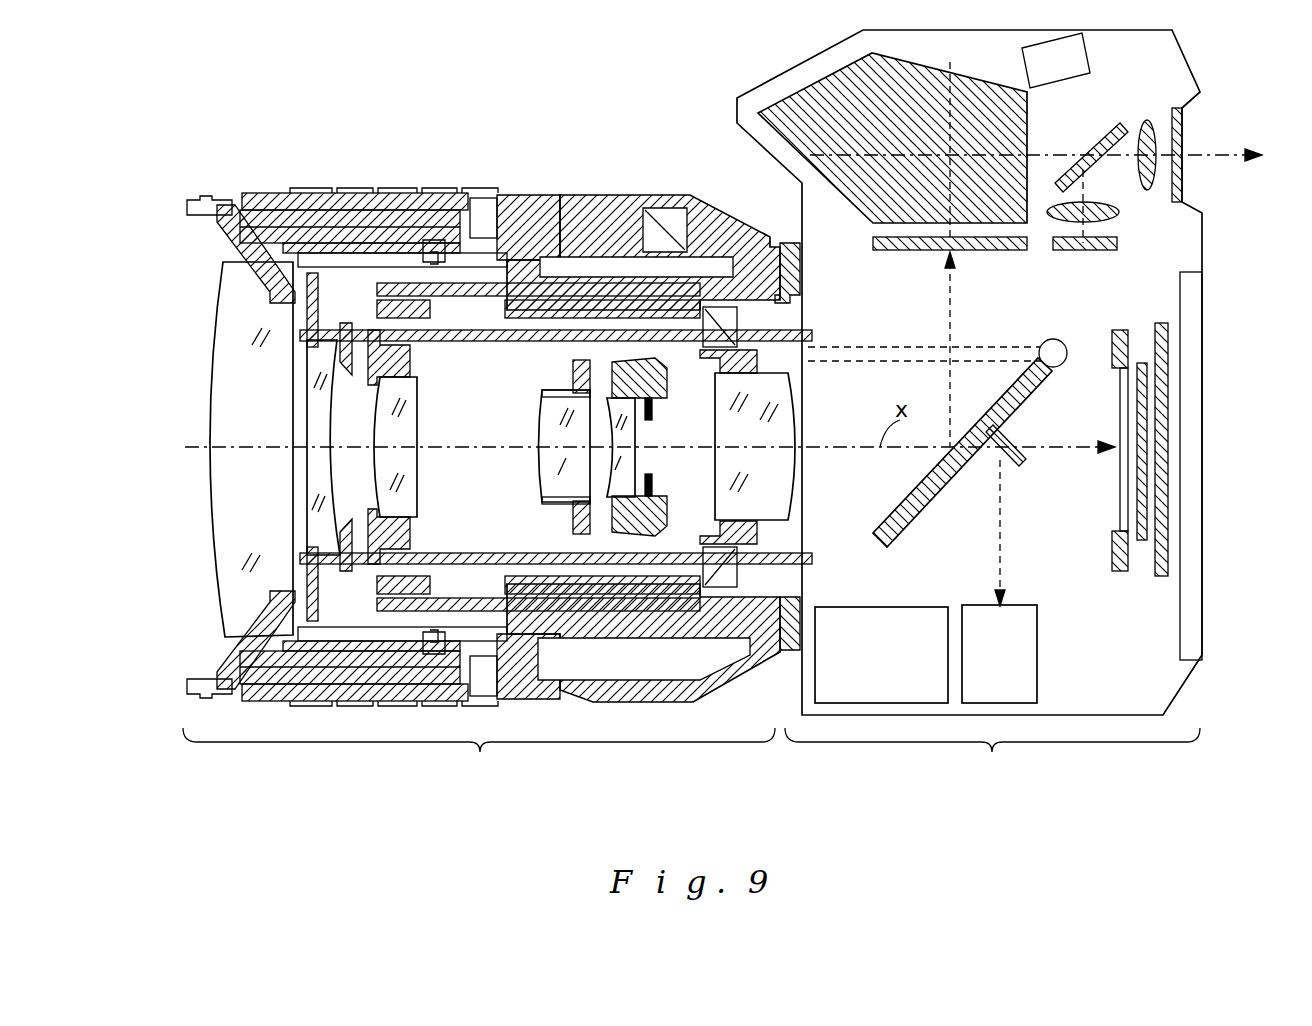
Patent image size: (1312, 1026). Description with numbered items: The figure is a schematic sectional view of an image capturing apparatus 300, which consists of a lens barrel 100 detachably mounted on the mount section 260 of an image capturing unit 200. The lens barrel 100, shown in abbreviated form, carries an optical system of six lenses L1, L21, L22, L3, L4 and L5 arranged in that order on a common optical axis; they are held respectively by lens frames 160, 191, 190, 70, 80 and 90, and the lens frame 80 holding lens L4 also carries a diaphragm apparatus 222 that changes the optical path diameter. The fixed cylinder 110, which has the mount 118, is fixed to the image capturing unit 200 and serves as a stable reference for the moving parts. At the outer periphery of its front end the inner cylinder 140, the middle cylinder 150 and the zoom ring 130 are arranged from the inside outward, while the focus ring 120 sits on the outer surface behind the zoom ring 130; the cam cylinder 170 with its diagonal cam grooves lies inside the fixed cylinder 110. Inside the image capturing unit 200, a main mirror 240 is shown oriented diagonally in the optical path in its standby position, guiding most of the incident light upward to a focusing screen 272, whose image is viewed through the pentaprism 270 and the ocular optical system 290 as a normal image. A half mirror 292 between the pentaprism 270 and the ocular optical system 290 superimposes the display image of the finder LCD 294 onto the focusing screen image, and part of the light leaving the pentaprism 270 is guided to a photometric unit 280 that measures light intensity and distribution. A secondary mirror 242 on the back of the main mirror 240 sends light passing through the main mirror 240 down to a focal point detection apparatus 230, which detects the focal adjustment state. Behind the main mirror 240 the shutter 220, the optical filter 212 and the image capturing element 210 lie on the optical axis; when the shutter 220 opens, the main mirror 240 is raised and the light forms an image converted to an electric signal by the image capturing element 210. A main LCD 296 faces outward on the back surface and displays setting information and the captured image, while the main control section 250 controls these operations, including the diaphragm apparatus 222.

The image capturing apparatus 300 is at (195, 150).
The lens barrel 100 is at (479, 756).
The image capturing unit 200 is at (992, 756).
The fixed cylinder 110 is at (655, 195).
The mount 118 is at (798, 313).
The focus ring 120 is at (580, 200).
The zoom ring 130 is at (440, 192).
The inner cylinder 140 is at (315, 250).
The middle cylinder 150 is at (375, 240).
The lens frame 160 is at (232, 265).
The cam cylinder 170 is at (515, 300).
The lens frame 190 is at (412, 378).
The lens frame 191 is at (345, 350).
The lens frame 70 is at (540, 407).
The lens frame 80 is at (633, 415).
The lens frame 90 is at (845, 448).
The diaphragm apparatus 222 is at (655, 412).
The mount section 260 is at (790, 243).
The pentaprism 270 is at (830, 95).
The focusing screen 272 is at (875, 252).
The photometric unit 280 is at (1082, 50).
The ocular optical system 290 is at (1182, 185).
The half mirror 292 is at (1112, 125).
The finder LCD 294 is at (1117, 243).
The main LCD 296 is at (1203, 397).
The image capturing element 210 is at (1165, 470).
The optical filter 212 is at (1147, 495).
The shutter 220 is at (1128, 547).
The focal point detection apparatus 230 is at (1030, 605).
The main mirror 240 is at (902, 525).
The secondary mirror 242 is at (1020, 470).
The main control section 250 is at (888, 605).
The lens L1 is at (207, 480).
The lens L21 is at (327, 442).
The lens L22 is at (418, 440).
The lens L3 is at (541, 470).
The lens L4 is at (636, 470).
The lens L5 is at (796, 470).